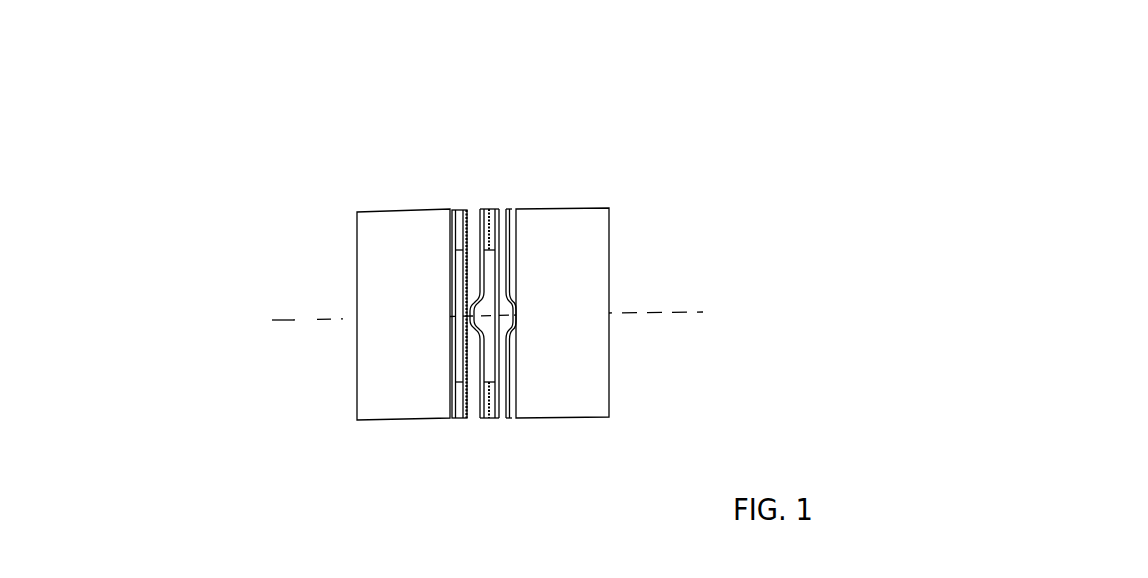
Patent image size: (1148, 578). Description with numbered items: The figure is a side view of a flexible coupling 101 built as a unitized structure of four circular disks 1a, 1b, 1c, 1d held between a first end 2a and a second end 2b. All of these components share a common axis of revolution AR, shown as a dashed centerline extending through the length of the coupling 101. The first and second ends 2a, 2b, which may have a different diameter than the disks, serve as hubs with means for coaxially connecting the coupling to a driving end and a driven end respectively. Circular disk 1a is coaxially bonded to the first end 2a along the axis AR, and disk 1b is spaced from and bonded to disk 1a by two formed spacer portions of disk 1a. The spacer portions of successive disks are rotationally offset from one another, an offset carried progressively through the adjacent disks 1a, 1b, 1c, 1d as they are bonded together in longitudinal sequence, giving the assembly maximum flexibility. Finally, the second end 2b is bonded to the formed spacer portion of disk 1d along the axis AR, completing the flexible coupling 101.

The flexible coupling 101 is at (399, 293).
The common axis of revolution AR is at (397, 397).
The first end 2a is at (571, 237).
The second end 2b is at (392, 247).
The circular disk 1a is at (505, 197).
The circular disk 1b is at (499, 426).
The circular disk 1c is at (472, 202).
The circular disk 1d is at (462, 426).